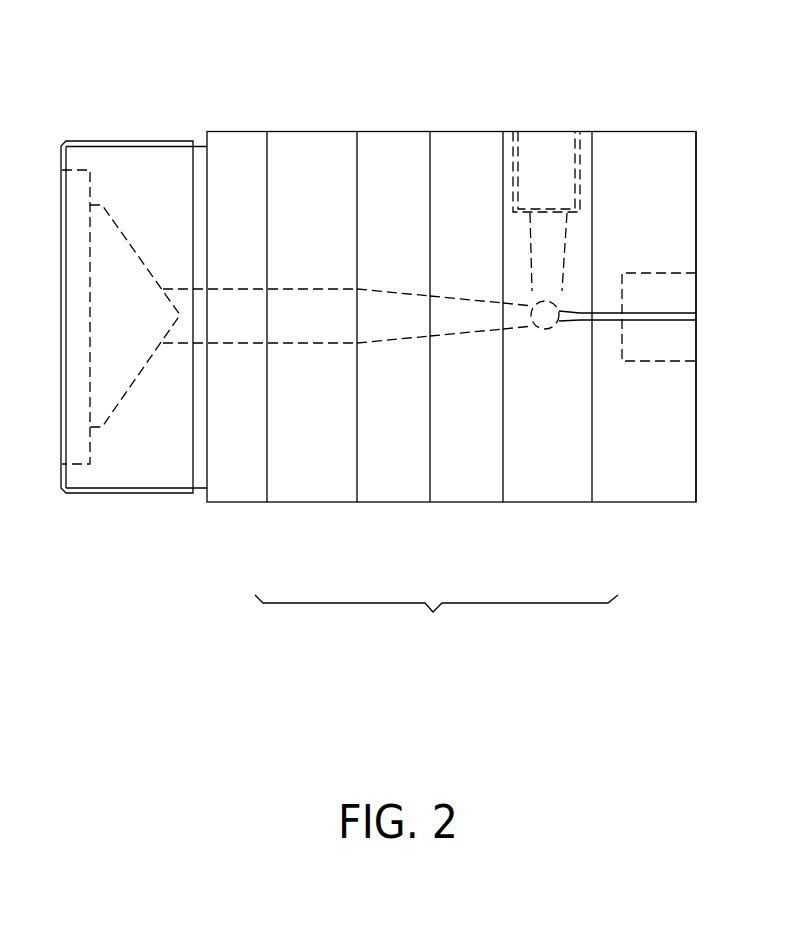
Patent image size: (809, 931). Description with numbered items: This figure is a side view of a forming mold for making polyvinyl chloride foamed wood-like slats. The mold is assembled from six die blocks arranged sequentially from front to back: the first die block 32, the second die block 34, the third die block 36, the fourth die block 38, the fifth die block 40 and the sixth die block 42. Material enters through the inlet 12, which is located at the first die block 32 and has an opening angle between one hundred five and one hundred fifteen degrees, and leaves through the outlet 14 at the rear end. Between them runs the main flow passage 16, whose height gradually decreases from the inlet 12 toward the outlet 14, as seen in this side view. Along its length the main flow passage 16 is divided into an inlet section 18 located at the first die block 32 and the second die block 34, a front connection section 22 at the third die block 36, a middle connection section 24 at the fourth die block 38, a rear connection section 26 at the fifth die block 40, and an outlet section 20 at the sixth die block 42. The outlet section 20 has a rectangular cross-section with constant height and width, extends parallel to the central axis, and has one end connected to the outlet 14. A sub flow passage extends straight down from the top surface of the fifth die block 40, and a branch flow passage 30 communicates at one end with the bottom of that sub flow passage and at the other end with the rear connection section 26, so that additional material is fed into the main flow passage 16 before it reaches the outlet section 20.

The inlet 12 is at (122, 398).
The outlet 14 is at (697, 318).
The main flow passage 16 is at (436, 622).
The inlet section 18 is at (310, 345).
The outlet section 20 is at (660, 320).
The front connection section 22 is at (387, 342).
The middle connection section 24 is at (468, 337).
The rear connection section 26 is at (515, 328).
The branch flow passage 30 is at (537, 304).
The first die block 32 is at (115, 143).
The second die block 34 is at (285, 142).
The third die block 36 is at (378, 142).
The fourth die block 38 is at (447, 143).
The fifth die block 40 is at (587, 133).
The sixth die block 42 is at (660, 150).